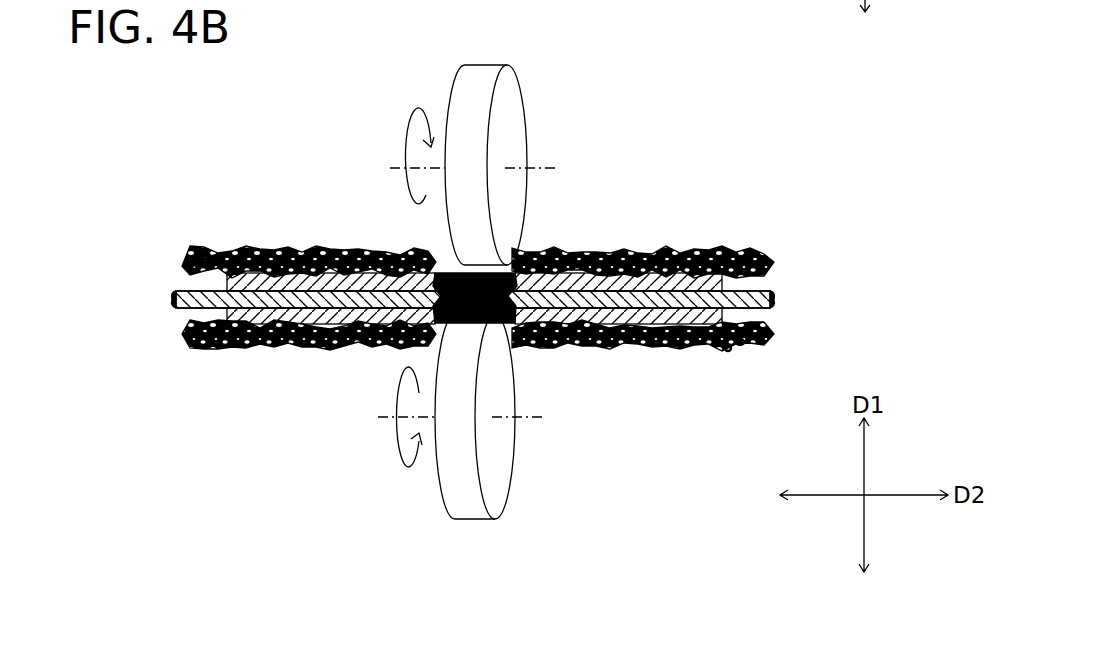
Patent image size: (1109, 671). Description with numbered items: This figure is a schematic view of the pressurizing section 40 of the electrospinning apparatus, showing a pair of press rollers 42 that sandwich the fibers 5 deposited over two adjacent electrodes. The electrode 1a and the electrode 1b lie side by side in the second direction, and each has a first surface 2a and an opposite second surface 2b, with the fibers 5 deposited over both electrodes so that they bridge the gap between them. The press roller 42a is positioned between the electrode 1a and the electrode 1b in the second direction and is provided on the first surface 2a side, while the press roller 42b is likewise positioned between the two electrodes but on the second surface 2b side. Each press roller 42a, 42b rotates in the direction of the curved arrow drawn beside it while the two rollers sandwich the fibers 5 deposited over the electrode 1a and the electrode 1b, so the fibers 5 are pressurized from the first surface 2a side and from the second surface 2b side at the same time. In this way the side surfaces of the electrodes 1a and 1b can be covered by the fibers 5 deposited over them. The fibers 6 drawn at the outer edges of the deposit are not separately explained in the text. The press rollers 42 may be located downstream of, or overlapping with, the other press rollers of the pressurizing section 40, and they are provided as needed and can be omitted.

The electrode 1a is at (164, 307).
The electrode 1b is at (798, 310).
The first surface 2a is at (297, 280).
The second surface 2b is at (283, 322).
The fibers 5 is at (272, 258).
The fibers 6 is at (195, 263).
The pressurizing section 40 is at (569, 285).
The press rollers 42 is at (541, 285).
The press roller 42a is at (515, 140).
The press roller 42b is at (495, 457).